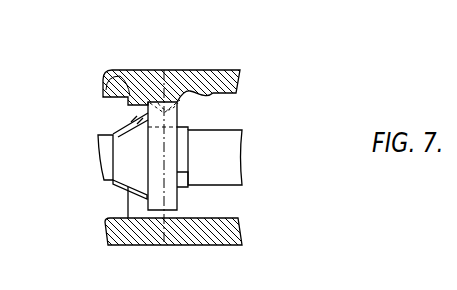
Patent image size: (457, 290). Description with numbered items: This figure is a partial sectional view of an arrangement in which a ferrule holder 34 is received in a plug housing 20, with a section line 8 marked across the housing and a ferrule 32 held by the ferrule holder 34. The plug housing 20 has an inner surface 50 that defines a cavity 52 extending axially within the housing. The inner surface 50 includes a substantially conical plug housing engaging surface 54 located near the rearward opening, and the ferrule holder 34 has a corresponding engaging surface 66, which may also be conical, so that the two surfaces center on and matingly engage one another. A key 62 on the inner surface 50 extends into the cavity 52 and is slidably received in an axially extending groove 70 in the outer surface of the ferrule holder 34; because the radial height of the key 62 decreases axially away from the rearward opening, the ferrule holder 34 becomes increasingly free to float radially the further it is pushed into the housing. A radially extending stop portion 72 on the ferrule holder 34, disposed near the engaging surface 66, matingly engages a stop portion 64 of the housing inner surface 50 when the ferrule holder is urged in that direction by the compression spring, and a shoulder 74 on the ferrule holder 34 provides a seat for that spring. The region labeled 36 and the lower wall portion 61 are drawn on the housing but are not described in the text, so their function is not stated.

The section line 8- 8 is at (163, 70).
The plug housing 20 is at (193, 70).
The ferrule 32 is at (108, 133).
The ferrule holder 34 is at (191, 192).
The plunger 36 is at (234, 187).
The inner surface 50 is at (210, 95).
The cavity 52 is at (233, 118).
The plug housing engaging surface 54 is at (122, 108).
The lower housing wall 61 is at (140, 207).
The key 62 is at (164, 71).
The stop portion 64 is at (108, 72).
The engaging surface 66 is at (123, 153).
The groove 70 is at (197, 94).
The stop portion 72 is at (168, 158).
The shoulder 74 is at (182, 178).